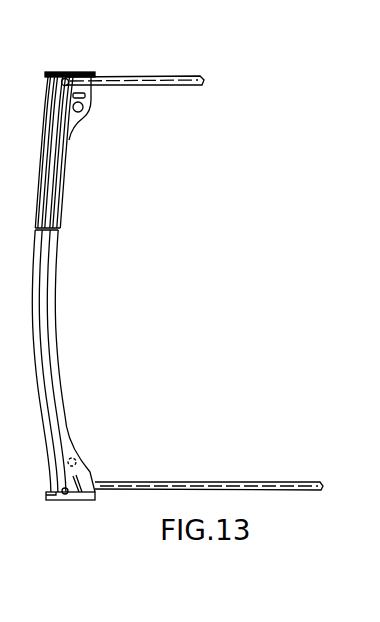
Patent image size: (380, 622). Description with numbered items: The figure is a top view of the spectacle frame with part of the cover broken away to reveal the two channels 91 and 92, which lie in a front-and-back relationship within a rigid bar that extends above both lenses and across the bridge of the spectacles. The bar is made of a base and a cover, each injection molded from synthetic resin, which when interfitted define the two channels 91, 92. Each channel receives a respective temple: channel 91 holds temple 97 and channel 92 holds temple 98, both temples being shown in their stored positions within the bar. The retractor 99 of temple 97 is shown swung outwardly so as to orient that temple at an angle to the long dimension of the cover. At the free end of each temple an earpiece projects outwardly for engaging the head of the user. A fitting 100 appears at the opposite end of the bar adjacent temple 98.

The outer channel member of pillar 91 is at (46, 177).
The inner channel member of pillar 92 is at (63, 180).
The lower rail 97 is at (246, 482).
The upper rail 98 is at (164, 77).
The lower fastener ring 99 is at (62, 500).
The upper fastener ring 100 is at (66, 77).